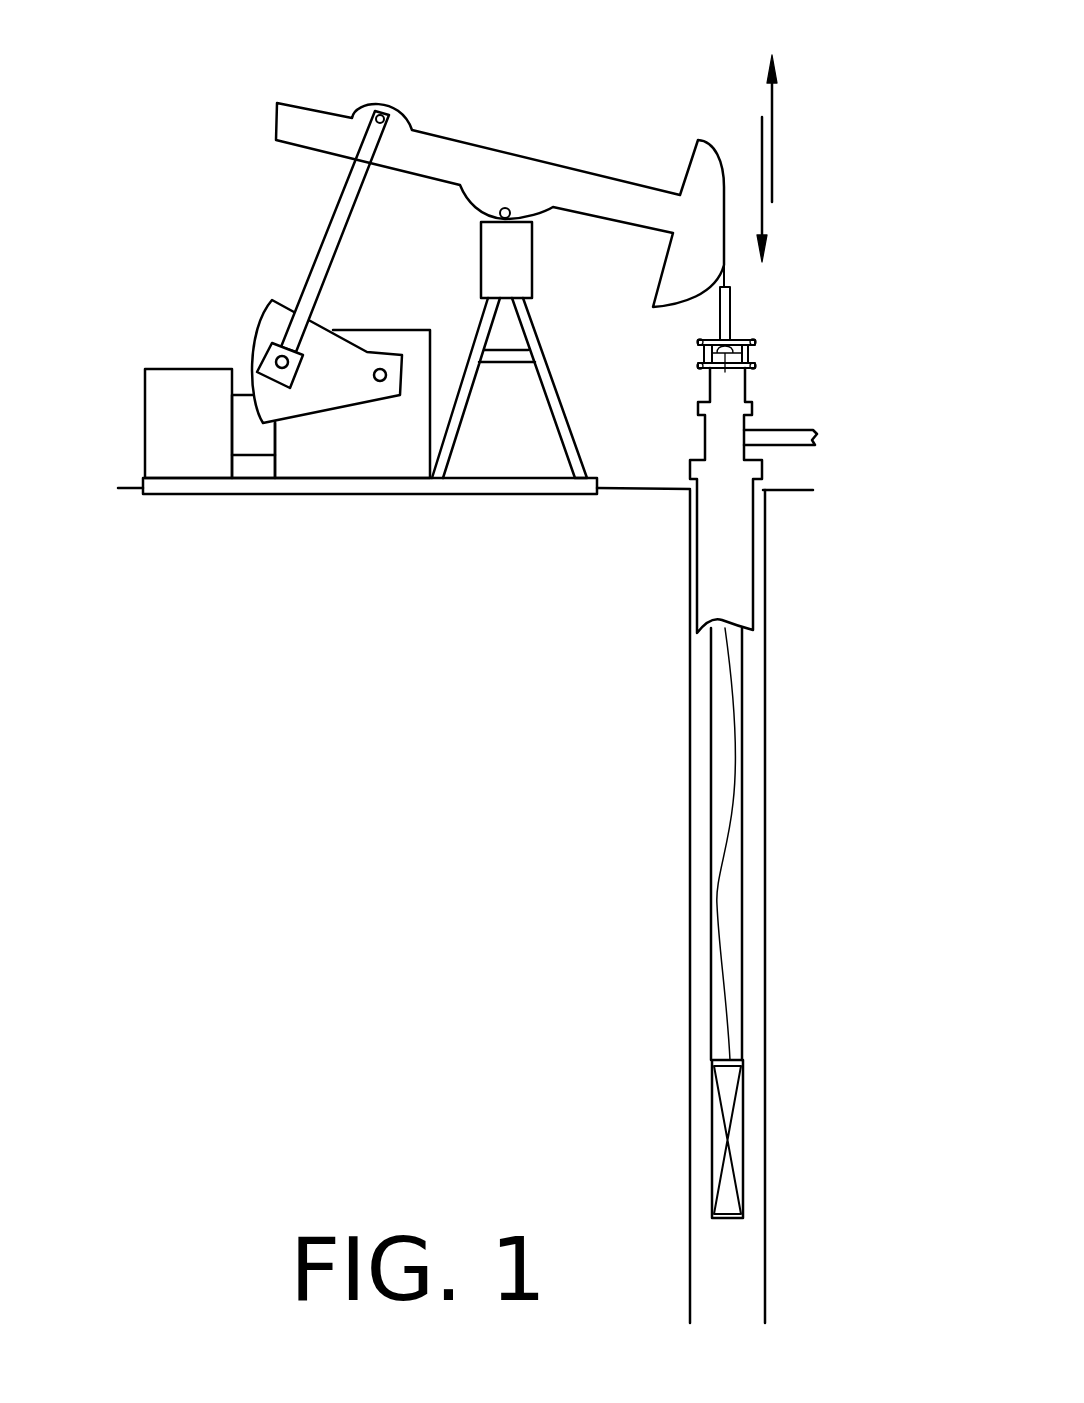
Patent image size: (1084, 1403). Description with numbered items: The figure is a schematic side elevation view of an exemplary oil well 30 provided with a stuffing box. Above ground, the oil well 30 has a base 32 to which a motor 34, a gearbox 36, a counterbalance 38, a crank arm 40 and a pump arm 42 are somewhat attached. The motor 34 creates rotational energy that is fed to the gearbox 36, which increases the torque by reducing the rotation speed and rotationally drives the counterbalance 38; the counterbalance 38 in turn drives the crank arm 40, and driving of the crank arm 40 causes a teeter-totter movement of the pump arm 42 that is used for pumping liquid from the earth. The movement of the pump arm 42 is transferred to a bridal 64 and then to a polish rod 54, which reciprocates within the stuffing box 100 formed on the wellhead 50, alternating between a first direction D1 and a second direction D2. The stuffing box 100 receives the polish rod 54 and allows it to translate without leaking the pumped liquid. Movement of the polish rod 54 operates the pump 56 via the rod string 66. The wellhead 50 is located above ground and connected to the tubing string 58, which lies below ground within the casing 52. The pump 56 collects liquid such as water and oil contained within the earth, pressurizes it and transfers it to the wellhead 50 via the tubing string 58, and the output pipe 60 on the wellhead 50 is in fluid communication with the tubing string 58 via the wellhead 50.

The oil well 30 is at (698, 83).
The base 32 is at (295, 488).
The motor 34 is at (190, 410).
The gearbox 36 is at (348, 445).
The counterbalance 38 is at (322, 377).
The crank arm 40 is at (338, 223).
The pump arm 42 is at (467, 173).
The wellhead 50 is at (718, 450).
The casing 52 is at (765, 605).
The polish rod 54 is at (728, 315).
The pump 56 is at (718, 1143).
The tubing string 58 is at (742, 775).
The output pipe 60 is at (788, 433).
The bridal 64 is at (725, 273).
The rod string 66 is at (717, 910).
The stuffing box 100 is at (766, 337).
The first direction D1 is at (773, 137).
The second direction D2 is at (763, 223).